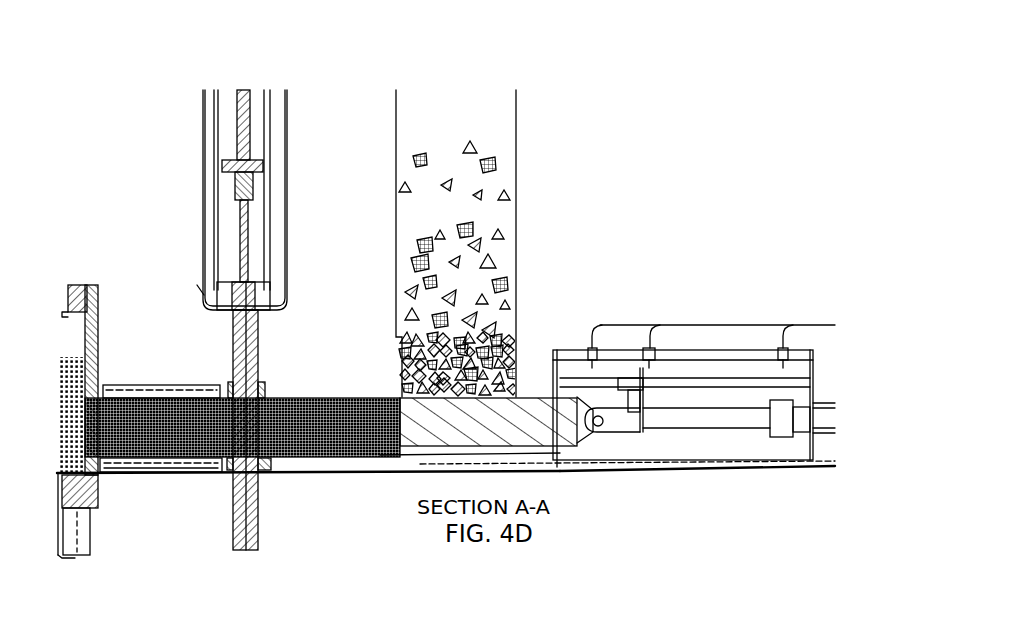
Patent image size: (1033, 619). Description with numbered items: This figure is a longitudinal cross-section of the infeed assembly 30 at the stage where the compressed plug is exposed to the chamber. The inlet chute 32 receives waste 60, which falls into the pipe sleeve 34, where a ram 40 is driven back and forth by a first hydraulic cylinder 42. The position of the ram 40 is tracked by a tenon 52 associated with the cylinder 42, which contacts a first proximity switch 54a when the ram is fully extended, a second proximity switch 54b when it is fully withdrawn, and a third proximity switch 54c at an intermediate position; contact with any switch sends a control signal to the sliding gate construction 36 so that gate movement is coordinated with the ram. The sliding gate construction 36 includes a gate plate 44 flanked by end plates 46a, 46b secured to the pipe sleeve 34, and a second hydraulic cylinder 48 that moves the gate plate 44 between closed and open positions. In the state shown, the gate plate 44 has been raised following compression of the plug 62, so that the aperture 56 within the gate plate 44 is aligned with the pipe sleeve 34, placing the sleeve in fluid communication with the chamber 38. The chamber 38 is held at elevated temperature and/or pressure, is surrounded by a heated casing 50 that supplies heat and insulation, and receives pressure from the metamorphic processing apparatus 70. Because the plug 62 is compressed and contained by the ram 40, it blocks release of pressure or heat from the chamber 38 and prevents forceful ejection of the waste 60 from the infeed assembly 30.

The infeed assembly 30 is at (650, 120).
The inlet chute 32 is at (517, 195).
The pipe sleeve 34 is at (403, 458).
The sliding gate construction 36 is at (150, 215).
The chamber 38 is at (122, 460).
The ram 40 is at (536, 428).
The first hydraulic cylinder 42 is at (823, 423).
The gate plate 44 is at (249, 327).
The end plate 46a is at (259, 348).
The end plate 46b is at (256, 315).
The second hydraulic cylinder 48 is at (251, 133).
The heated casing 50 is at (187, 460).
The tenon 52 is at (673, 368).
The first proximity switch 54a is at (592, 346).
The second proximity switch 54b is at (783, 346).
The third proximity switch 54c is at (650, 346).
The aperture 56 is at (273, 462).
The waste 60 is at (501, 235).
The plug 62 is at (317, 455).
The metamorphic processing apparatus 70 is at (50, 263).